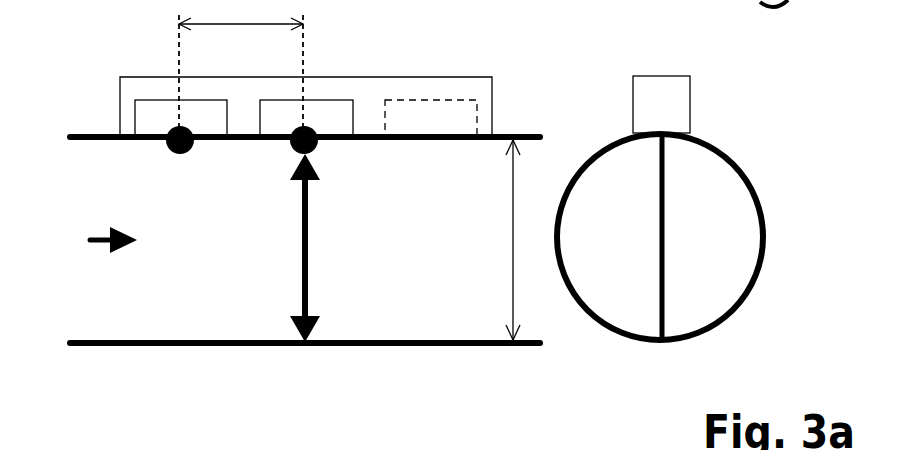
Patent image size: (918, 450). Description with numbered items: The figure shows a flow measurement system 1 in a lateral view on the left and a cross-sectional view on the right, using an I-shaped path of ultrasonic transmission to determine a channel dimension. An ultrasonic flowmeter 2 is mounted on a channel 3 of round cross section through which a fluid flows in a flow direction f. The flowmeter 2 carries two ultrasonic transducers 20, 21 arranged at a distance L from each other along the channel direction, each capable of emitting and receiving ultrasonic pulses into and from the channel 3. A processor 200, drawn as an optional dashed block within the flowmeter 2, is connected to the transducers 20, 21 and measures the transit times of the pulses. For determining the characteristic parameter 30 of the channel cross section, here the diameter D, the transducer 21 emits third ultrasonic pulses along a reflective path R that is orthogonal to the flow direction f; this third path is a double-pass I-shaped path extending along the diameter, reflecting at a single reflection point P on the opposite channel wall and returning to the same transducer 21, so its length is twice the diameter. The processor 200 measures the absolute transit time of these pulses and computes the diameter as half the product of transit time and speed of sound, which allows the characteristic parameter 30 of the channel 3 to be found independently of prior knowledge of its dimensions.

The flow measurement system 1 is at (74, 51).
The ultrasonic flowmeter 2 is at (118, 107).
The first ultrasonic transducer 20 is at (148, 100).
The second ultrasonic transducer 21 is at (290, 100).
The processor 200 is at (430, 97).
The channel 3 is at (117, 345).
The characteristic parameter 30 is at (513, 243).
The reflection point P is at (302, 345).
The distance between transducers L is at (241, 15).
The flow direction f is at (95, 237).
The reflective path R is at (310, 242).